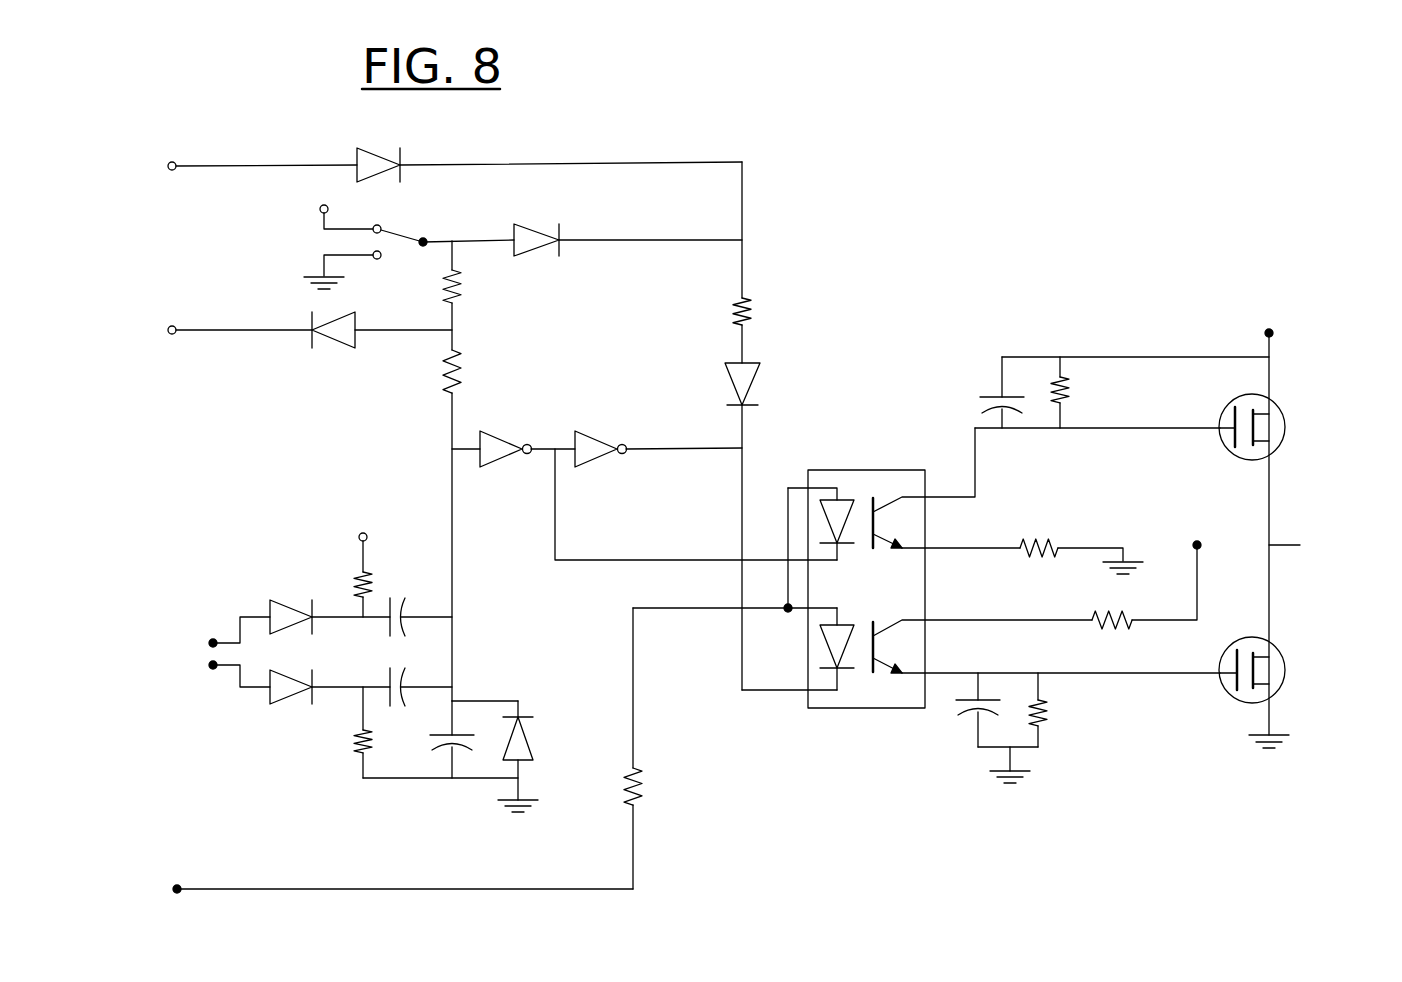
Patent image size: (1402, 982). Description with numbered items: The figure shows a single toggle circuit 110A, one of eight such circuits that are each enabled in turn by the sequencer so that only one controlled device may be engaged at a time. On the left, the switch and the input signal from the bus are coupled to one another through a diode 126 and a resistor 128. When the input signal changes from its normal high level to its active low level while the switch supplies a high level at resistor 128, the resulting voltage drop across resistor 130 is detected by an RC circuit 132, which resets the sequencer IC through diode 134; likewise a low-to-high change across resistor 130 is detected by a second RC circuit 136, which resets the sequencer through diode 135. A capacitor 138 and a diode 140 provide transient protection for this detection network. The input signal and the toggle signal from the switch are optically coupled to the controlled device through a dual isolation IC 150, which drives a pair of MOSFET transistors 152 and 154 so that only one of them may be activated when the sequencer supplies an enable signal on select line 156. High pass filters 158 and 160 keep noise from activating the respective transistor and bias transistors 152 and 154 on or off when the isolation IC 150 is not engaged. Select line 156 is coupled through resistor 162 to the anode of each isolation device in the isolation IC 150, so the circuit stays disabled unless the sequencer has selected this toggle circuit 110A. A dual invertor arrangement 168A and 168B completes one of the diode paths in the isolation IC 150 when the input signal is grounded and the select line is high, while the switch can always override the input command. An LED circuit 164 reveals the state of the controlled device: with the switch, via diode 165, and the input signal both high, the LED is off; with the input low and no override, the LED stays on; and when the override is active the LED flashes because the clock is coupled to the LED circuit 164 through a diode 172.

The toggle circuit 110A is at (1130, 167).
The diode 172 is at (378, 180).
The diode 165 is at (545, 224).
The resistor 128 is at (468, 285).
The resistor 130 is at (468, 374).
The diode 126 is at (331, 346).
The LED circuit 164 is at (763, 315).
The invertor 168A is at (500, 463).
The invertor 168B is at (597, 461).
The RC circuit 132 is at (397, 593).
The diode 134 is at (268, 612).
The diode 135 is at (266, 696).
The second RC circuit 136 is at (400, 712).
The capacitor 138 is at (465, 722).
The diode 140 is at (538, 737).
The select line 156 is at (345, 887).
The resistor 162 is at (650, 786).
The dual isolation IC 150 is at (848, 712).
The high pass filter 158 is at (1053, 407).
The MOSFET transistor 152 is at (1222, 447).
The MOSFET transistor 154 is at (1237, 702).
The high pass filter 160 is at (987, 720).